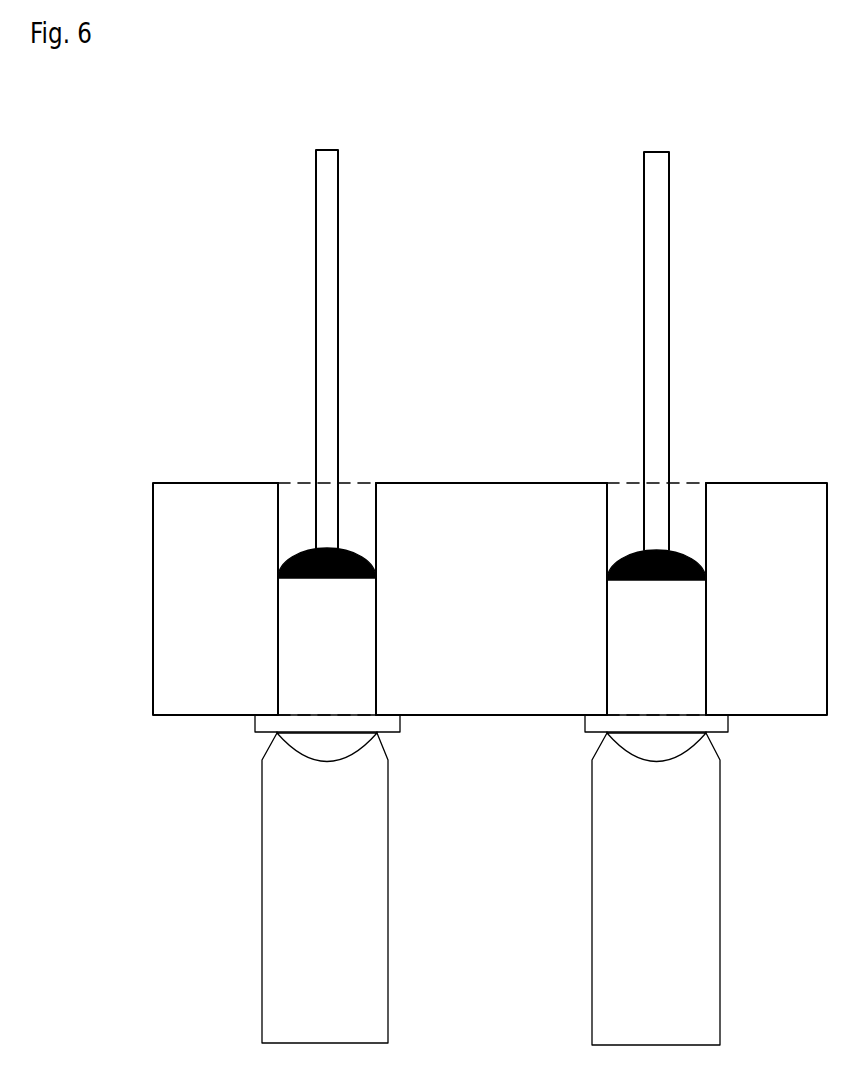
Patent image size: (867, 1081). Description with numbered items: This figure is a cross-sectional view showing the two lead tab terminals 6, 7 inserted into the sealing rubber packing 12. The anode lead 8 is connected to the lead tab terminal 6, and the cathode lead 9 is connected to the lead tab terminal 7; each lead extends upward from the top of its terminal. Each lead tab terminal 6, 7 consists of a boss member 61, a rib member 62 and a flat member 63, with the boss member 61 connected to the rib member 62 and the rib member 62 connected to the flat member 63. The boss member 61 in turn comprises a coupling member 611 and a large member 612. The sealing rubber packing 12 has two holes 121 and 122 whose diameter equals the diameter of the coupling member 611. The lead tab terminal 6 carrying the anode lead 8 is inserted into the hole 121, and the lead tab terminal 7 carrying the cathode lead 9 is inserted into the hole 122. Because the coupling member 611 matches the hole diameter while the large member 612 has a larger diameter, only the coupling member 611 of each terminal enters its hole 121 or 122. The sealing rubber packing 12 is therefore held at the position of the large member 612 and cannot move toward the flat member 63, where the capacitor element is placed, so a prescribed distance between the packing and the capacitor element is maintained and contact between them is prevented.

The lead tab terminal 6 is at (353, 887).
The lead tab terminal 7 is at (710, 858).
The anode lead 8 is at (340, 320).
The cathode lead 9 is at (670, 320).
The sealing rubber packing 12 is at (486, 496).
The hole 121 is at (371, 498).
The hole 122 is at (695, 498).
The boss member 61 is at (542, 607).
The coupling member 611 is at (368, 614).
The large member 612 is at (390, 722).
The rib member 62 is at (378, 750).
The flat member 63 is at (380, 948).